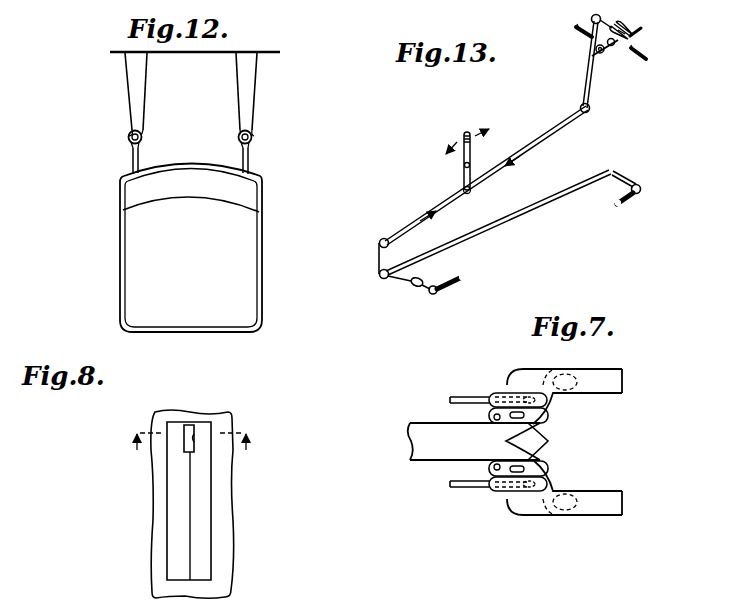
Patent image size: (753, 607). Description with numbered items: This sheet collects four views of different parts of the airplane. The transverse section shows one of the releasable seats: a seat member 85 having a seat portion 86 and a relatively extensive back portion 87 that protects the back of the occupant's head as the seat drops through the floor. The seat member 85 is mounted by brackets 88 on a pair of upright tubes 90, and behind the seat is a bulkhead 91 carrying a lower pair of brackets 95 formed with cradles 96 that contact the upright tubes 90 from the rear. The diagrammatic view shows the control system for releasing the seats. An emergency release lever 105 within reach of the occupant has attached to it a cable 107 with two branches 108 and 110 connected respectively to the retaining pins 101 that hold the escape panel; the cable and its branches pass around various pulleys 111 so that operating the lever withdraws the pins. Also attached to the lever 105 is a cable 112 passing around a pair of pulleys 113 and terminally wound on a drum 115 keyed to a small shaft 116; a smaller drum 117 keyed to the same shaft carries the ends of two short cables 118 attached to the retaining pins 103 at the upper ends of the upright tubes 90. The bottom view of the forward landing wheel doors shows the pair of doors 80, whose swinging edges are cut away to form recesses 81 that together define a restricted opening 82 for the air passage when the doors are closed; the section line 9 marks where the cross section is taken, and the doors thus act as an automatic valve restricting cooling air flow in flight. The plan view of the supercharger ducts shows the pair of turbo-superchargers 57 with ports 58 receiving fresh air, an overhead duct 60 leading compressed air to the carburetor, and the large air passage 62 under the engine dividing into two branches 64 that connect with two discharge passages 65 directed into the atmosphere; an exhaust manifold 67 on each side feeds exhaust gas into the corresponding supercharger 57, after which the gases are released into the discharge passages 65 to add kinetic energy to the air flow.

In FIG. 12, the bulkhead 91 is at (122, 55).
In FIG. 12, the lower pair of brackets 95 is at (133, 88).
In FIG. 12, the cradles 96 is at (129, 133).
In FIG. 12, the upright tubes 90 is at (129, 144).
In FIG. 12, the brackets 88 is at (132, 161).
In FIG. 12, the back portion 87 is at (145, 197).
In FIG. 12, the seat portion 86 is at (250, 252).
In FIG. 12, the seat member 85 is at (192, 248).
In FIG. 8, the doors 80 is at (196, 498).
In FIG. 8, the recesses 81 is at (195, 440).
In FIG. 8, the restricted opening 82 is at (189, 427).
In FIG. 8, the section line 9— 9 is at (189, 443).
In FIG. 13, the retaining pins 101 is at (462, 280).
In FIG. 13, the retaining pins 103 is at (578, 32).
In FIG. 13, the emergency release lever 105 is at (467, 133).
In FIG. 13, the cable 107 is at (486, 175).
In FIG. 13, the branch 108 is at (437, 294).
In FIG. 13, the branch 110 is at (515, 214).
In FIG. 13, the pulleys 111 is at (381, 240).
In FIG. 13, the cable 112 is at (532, 142).
In FIG. 13, the pulleys 113 is at (593, 19).
In FIG. 13, the drum 115 is at (628, 30).
In FIG. 13, the small shaft 116 is at (637, 40).
In FIG. 13, the smaller drum 117 is at (594, 58).
In FIG. 13, the short cables 118 is at (590, 47).
In FIG. 7, the turbo-superchargers 57 is at (503, 389).
In FIG. 7, the ports 58 is at (447, 445).
In FIG. 7, the overhead duct 60 is at (549, 441).
In FIG. 7, the air passage 62 is at (422, 444).
In FIG. 7, the branches 64 is at (552, 404).
In FIG. 7, the discharge passages 65 is at (608, 379).
In FIG. 7, the exhaust manifold 67 is at (476, 393).